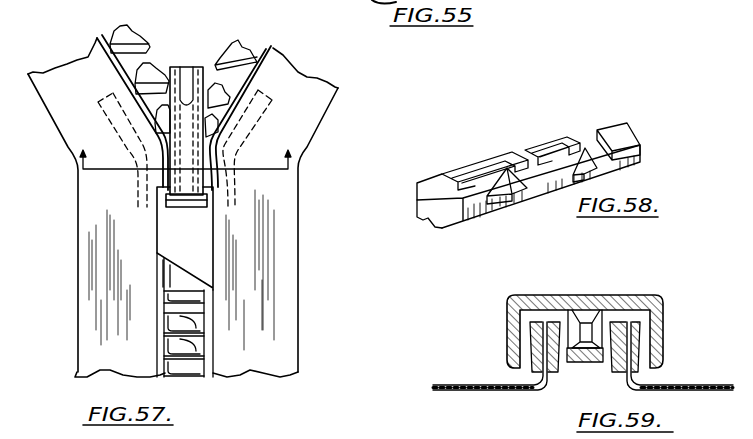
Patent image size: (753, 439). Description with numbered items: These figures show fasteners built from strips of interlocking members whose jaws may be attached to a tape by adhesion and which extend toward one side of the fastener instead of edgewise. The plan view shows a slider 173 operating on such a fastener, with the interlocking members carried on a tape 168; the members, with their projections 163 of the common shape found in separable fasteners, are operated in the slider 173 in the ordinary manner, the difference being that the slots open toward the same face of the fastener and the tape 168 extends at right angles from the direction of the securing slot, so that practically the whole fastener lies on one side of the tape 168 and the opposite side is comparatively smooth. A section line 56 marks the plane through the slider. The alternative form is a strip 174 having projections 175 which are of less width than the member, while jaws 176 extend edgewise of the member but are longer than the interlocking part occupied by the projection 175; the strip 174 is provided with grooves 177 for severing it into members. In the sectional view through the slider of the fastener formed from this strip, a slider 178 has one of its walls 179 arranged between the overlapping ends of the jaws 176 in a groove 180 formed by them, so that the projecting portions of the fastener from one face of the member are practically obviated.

In FIG. 57, the section line 56- 56 is at (190, 150).
In FIG. 57, the projections 163 is at (128, 26).
In FIG. 57, the tape 168 is at (82, 257).
In FIG. 57, the slider 173 is at (180, 67).
In FIG. 58, the strip 174 is at (482, 218).
In FIG. 58, the projections 175 is at (572, 144).
In FIG. 59, the projections 175 is at (588, 310).
In FIG. 58, the jaws 176 is at (432, 184).
In FIG. 59, the jaws 176 is at (533, 356).
In FIG. 58, the grooves 177 is at (533, 201).
In FIG. 59, the slider 178 is at (555, 295).
In FIG. 59, the wall 179 is at (583, 363).
In FIG. 59, the groove 180 is at (603, 364).